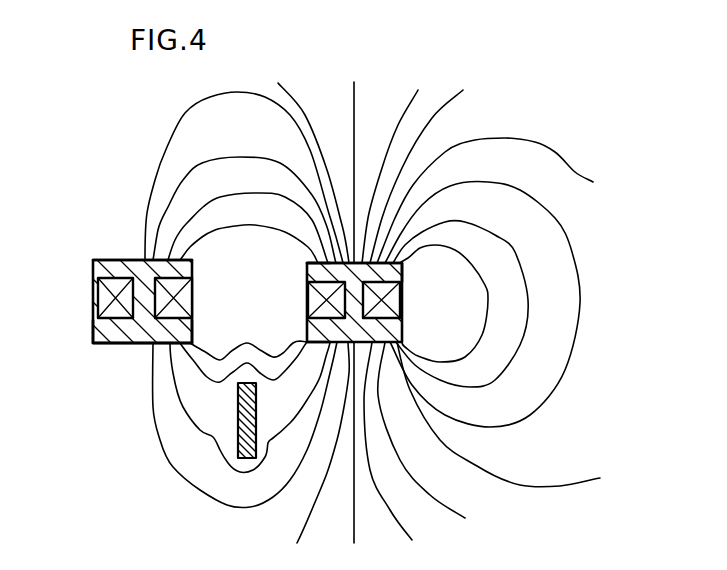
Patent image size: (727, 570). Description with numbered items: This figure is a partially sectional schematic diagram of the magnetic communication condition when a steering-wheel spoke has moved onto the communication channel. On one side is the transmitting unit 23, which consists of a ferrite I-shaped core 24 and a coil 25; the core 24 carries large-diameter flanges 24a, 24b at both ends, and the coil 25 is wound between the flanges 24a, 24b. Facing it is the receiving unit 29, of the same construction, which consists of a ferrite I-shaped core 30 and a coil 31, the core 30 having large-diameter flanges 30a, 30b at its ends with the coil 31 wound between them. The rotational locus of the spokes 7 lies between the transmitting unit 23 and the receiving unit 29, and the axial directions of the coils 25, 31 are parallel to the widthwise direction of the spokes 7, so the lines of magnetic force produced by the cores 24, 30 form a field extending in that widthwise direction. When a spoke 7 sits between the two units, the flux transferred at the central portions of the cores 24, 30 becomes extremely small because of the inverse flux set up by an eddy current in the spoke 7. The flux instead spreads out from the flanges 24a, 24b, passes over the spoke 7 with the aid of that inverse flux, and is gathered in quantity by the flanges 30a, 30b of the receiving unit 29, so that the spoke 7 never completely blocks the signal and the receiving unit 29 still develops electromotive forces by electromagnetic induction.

The spokes 7 is at (256, 412).
The transmitting unit 23 is at (403, 270).
The ferrite I-shaped core 24 is at (403, 330).
The flange 24a is at (313, 263).
The flange 24b is at (308, 348).
The coil 25 is at (402, 297).
The receiving unit 29 is at (94, 272).
The ferrite I-shaped core 30 is at (94, 333).
The flange 30a is at (122, 260).
The flange 30b is at (125, 343).
The coil 31 is at (94, 297).